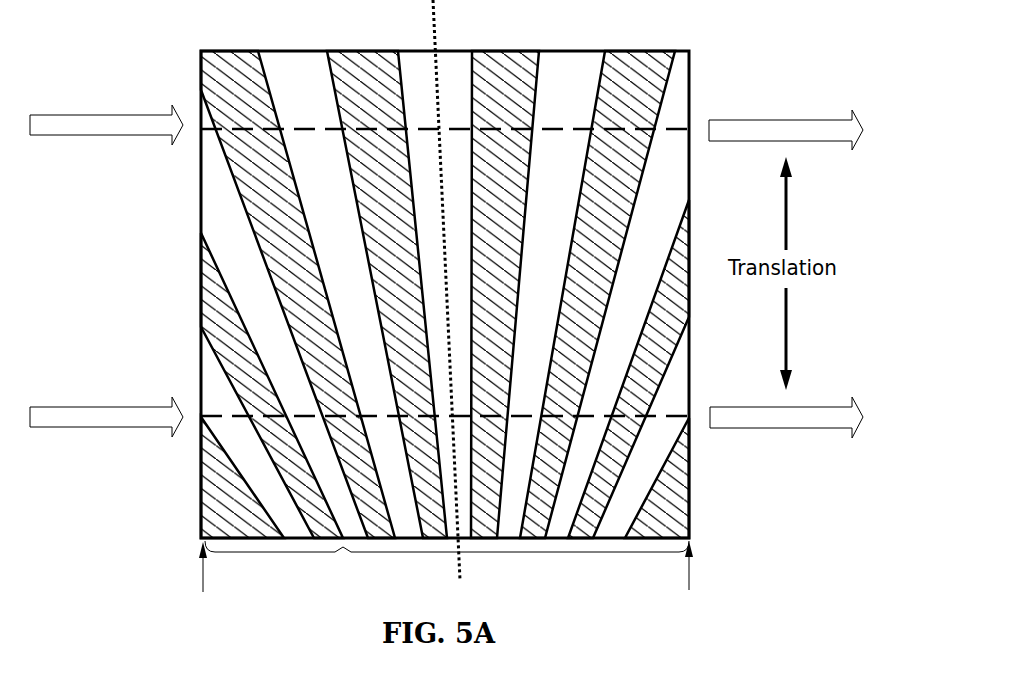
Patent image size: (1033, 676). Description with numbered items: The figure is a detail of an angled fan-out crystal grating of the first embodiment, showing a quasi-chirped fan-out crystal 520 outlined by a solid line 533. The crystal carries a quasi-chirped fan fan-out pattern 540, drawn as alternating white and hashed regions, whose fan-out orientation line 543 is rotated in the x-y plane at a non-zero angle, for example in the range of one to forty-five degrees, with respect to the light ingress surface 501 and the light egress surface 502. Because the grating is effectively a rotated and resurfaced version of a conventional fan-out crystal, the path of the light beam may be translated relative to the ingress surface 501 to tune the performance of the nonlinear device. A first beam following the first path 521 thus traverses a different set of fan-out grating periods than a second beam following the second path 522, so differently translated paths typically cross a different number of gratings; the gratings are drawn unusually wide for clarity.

The light ingress surface 501 is at (203, 583).
The light egress surface 502 is at (691, 580).
The quasi-chirped fan-out crystal 520 is at (215, 493).
The first path 521 is at (198, 136).
The second path 522 is at (220, 406).
The solid line 533 is at (200, 249).
The quasi-chirped fan fan-out pattern 540 is at (447, 563).
The fan-out orientation line 543 is at (437, 22).